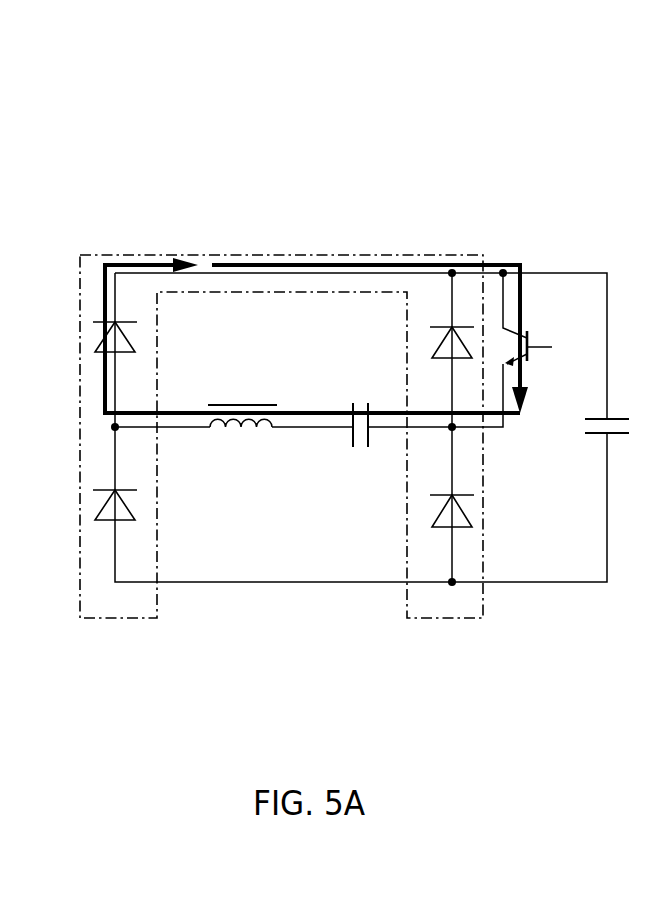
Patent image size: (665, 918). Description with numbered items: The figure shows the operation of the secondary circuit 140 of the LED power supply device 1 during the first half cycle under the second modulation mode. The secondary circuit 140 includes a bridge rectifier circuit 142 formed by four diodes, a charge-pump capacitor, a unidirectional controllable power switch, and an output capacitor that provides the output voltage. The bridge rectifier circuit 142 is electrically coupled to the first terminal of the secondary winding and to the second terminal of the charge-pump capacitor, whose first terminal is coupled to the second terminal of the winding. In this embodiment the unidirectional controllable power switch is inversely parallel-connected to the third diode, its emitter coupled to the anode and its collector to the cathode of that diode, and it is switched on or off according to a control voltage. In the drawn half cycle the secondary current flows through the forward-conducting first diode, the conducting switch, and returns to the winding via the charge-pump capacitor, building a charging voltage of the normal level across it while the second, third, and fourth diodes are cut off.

The secondary circuit 140 is at (86, 71).
The bridge rectifier circuit 142 is at (223, 255).
The power converter (partial numeral) 1 is at (664, 71).